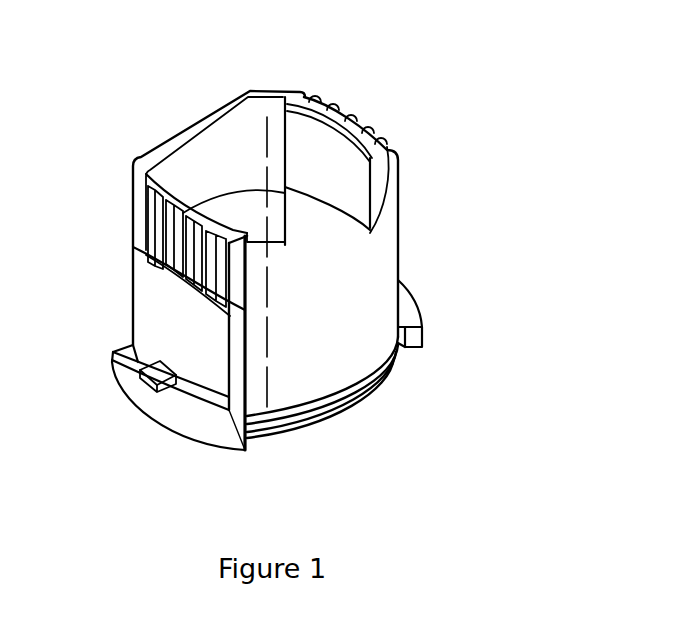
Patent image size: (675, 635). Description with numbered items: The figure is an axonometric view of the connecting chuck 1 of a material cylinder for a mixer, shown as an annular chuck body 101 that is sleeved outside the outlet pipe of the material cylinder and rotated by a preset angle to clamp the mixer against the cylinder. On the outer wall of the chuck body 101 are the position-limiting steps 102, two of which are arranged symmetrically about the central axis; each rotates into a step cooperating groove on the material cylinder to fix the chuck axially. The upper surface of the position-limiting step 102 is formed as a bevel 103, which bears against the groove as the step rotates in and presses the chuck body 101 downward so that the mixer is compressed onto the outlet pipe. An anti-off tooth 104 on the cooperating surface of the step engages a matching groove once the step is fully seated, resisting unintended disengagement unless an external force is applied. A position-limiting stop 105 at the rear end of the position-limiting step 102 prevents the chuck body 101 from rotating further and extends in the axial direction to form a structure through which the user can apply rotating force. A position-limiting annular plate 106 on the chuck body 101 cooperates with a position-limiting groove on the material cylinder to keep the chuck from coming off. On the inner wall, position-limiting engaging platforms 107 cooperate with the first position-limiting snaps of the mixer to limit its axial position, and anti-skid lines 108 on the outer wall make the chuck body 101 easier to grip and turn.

The connecting chuck 1 is at (308, 60).
The chuck body 101 is at (378, 273).
The position-limiting step 102 is at (168, 413).
The bevel 103 is at (200, 397).
The anti-off tooth 104 is at (155, 387).
The position-limiting stop 105 is at (238, 383).
The position-limiting annular plate 106 is at (393, 387).
The position-limiting engaging platform 107 is at (332, 157).
The anti-skid lines 108 is at (148, 215).